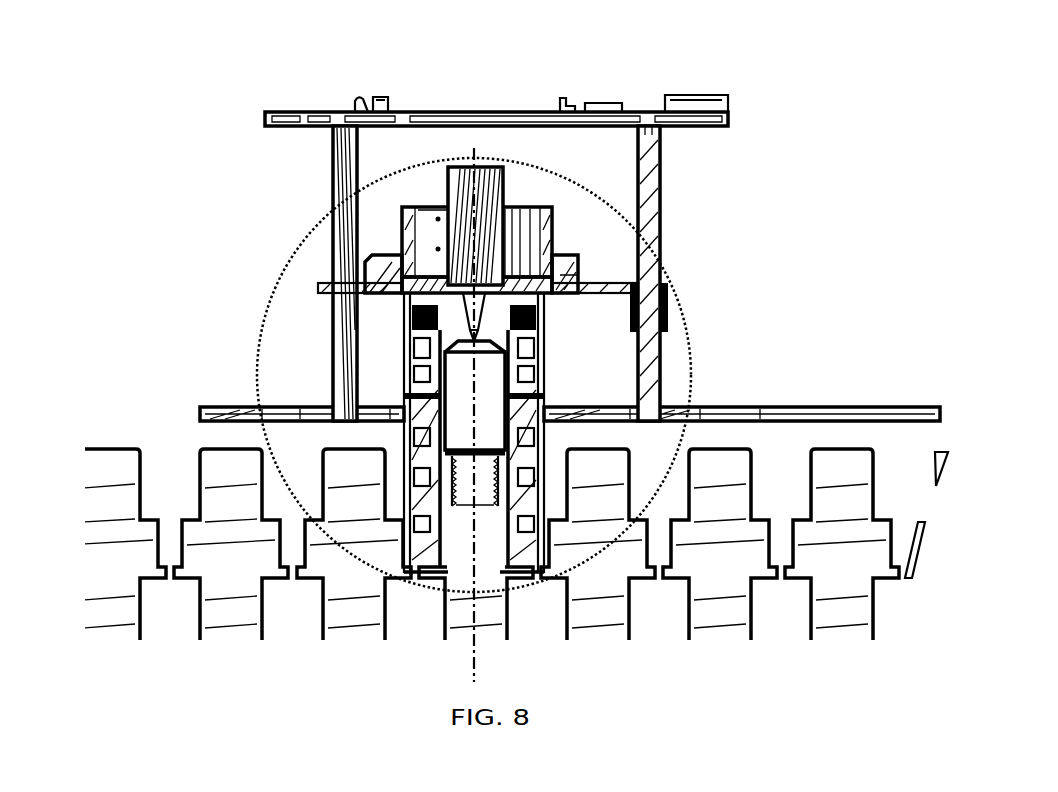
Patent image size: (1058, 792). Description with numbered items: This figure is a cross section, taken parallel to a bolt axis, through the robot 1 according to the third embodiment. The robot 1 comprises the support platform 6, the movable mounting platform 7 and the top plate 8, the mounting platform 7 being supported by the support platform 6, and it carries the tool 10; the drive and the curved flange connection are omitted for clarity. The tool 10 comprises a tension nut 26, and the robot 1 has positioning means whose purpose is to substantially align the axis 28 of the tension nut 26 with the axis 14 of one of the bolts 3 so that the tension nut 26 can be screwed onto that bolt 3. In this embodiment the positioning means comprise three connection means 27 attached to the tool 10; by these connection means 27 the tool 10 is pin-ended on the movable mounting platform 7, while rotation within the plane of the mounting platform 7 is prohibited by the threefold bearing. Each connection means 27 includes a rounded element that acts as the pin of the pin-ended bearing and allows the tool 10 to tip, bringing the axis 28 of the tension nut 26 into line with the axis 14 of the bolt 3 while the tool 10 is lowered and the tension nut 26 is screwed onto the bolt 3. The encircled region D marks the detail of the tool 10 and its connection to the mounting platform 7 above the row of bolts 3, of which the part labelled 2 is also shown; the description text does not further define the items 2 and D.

The robot 1 is at (871, 64).
The receptacle 2 is at (100, 547).
The bolt 3 is at (110, 486).
The support platform 6 is at (815, 414).
The movable mounting platform 7 is at (582, 287).
The top plate 8 is at (330, 119).
The tool 10 is at (567, 230).
The axis of the bolt 14 is at (474, 658).
The tension nut 26 is at (505, 460).
The connection means 27 is at (515, 562).
The axis of the tension nut 28 is at (481, 139).
The detail circle D is at (306, 229).